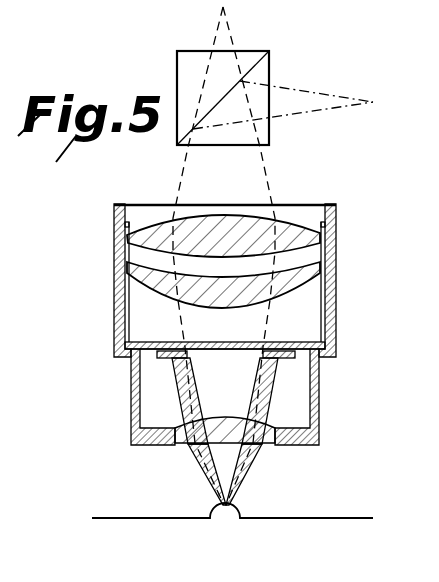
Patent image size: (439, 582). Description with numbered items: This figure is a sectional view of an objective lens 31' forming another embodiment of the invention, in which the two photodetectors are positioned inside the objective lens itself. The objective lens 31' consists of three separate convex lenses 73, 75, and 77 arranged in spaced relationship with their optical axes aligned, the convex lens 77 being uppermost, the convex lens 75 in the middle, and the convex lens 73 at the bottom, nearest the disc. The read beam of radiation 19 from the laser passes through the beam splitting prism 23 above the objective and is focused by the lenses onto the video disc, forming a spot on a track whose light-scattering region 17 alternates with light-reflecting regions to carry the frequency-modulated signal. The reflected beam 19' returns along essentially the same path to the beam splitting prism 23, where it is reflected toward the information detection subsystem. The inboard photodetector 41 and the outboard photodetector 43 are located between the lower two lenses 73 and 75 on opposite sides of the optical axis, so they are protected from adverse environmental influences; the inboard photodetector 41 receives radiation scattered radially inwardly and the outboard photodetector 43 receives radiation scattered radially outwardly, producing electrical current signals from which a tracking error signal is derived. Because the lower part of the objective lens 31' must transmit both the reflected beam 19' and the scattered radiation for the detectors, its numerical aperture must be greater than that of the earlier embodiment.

The beam splitting prism 23 is at (188, 52).
The read beam of radiation 19 is at (229, 256).
The reflected beam 19' is at (283, 94).
The convex lens 77 is at (292, 222).
The convex lens 75 is at (300, 265).
The objective lens 31' is at (263, 354).
The inboard photodetector 41 is at (167, 358).
The outboard photodetector 43 is at (296, 357).
The convex lens 73 is at (232, 447).
The light-scattering region 17 is at (238, 513).